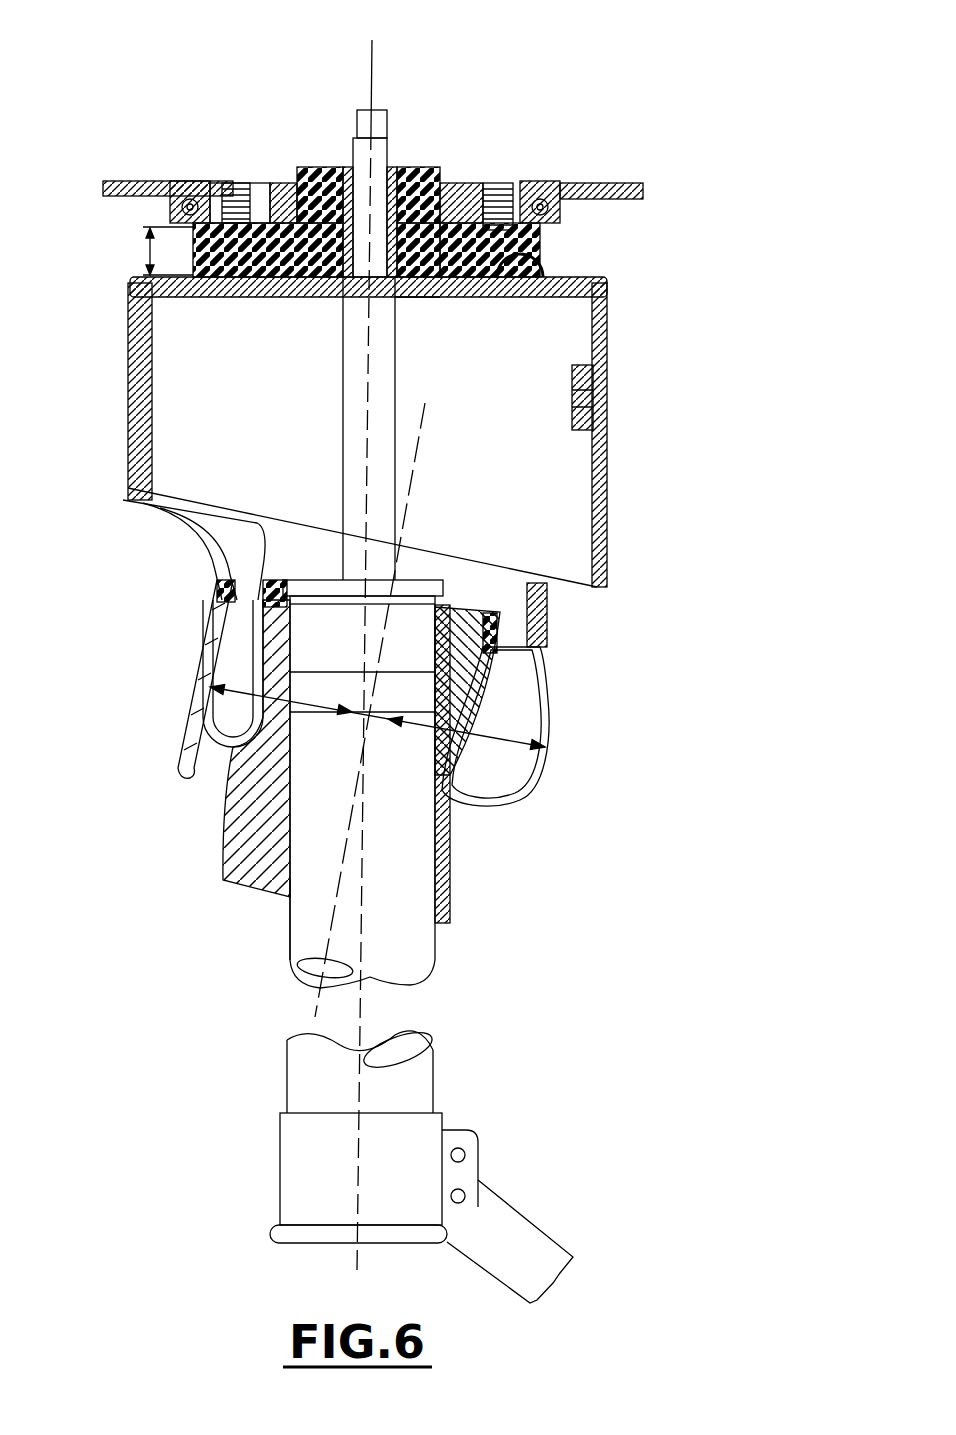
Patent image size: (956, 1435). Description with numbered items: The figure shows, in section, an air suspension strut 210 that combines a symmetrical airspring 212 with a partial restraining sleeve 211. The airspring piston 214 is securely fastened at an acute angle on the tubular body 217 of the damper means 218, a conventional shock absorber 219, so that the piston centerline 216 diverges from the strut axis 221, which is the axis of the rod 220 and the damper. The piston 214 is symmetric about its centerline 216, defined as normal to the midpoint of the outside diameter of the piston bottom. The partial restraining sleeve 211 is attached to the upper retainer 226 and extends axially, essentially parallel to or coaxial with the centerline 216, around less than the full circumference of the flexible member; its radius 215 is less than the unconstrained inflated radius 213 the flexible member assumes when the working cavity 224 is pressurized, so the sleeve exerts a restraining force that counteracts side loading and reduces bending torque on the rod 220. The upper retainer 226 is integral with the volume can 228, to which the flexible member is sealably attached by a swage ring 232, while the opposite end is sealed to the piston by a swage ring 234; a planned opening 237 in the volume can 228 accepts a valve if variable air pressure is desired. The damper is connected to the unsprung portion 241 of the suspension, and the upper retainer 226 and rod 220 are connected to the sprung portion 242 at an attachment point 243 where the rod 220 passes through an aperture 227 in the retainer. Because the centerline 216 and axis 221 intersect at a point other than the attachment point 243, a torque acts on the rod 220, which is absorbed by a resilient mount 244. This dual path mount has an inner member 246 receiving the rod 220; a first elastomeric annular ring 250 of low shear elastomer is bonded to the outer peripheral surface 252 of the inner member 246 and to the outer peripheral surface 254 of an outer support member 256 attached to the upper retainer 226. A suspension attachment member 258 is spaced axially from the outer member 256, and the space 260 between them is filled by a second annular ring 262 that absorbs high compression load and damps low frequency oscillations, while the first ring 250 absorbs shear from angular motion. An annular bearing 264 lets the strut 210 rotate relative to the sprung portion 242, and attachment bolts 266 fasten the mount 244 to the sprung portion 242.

The air suspension strut 210 is at (608, 80).
The partial restraining sleeve 211 is at (190, 727).
The symmetrical airspring 212 is at (565, 686).
The unconstrained inflated radius 213 is at (500, 740).
The airspring piston 214 is at (443, 852).
The radius of the partial restraining sleeve 215 is at (265, 758).
The piston centerline 216 is at (317, 1000).
The tubular body 217 is at (435, 950).
The damper means 218 is at (285, 910).
The shock absorber 219 is at (300, 813).
The rod 220 is at (386, 395).
The strut axis 221 is at (373, 72).
The working cavity 224 is at (578, 504).
The upper retainer 226 is at (572, 288).
The aperture 227 is at (441, 300).
The volume can 228 is at (133, 360).
The swage ring 232 is at (547, 625).
The swage ring 234 is at (260, 603).
The planned opening 237 is at (608, 397).
The unsprung portion 241 is at (470, 1167).
The sprung portion 242 is at (123, 181).
The attachment point 243 is at (350, 283).
The resilient mount 244 is at (478, 187).
The inner member 246 is at (397, 167).
The first elastomeric annular ring 250 is at (480, 178).
The outer peripheral surface of the inner member 252 is at (423, 173).
The outer peripheral surface of the outer support member 254 is at (325, 170).
The outer support member 256 is at (256, 285).
The suspension attachment member 258 is at (280, 178).
The space 260 is at (143, 253).
The second annular ring 262 is at (238, 283).
The annular bearing 264 is at (205, 182).
The attachment bolts 266 is at (263, 183).